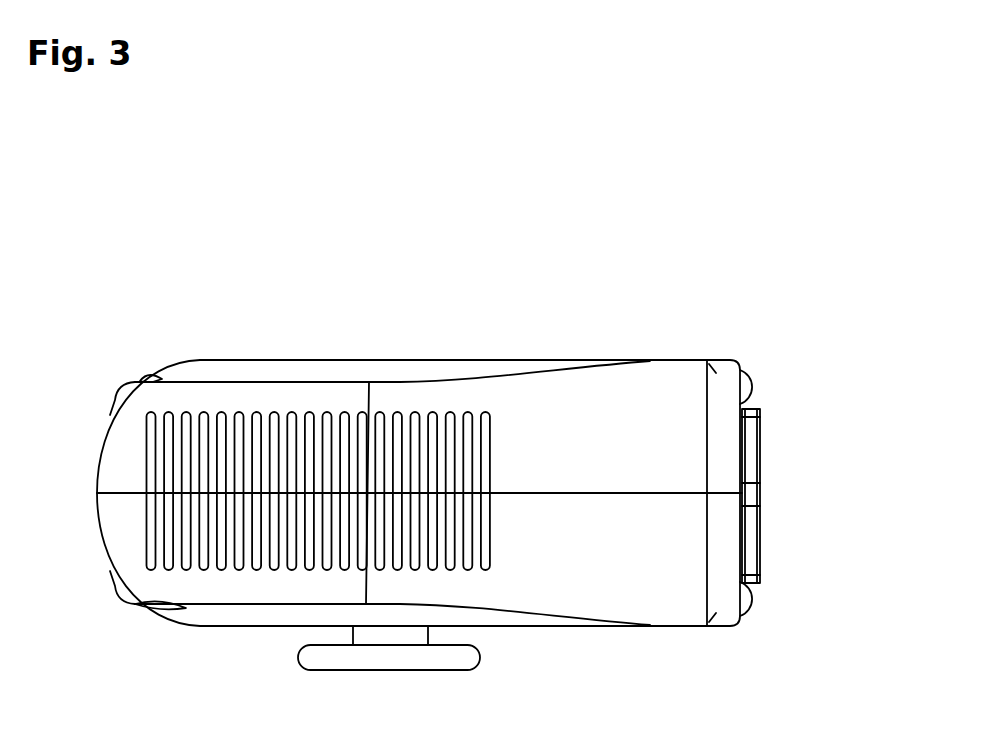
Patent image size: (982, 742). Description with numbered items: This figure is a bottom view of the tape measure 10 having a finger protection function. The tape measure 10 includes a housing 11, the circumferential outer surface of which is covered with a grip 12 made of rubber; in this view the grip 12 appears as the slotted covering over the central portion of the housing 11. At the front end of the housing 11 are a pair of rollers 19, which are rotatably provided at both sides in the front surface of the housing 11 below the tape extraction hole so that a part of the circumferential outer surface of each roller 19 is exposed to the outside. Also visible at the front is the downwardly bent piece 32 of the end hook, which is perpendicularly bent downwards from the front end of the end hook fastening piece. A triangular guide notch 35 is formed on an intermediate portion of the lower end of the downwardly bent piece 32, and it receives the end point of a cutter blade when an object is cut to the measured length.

The tape measure 10 is at (145, 291).
The housing 11 is at (425, 372).
The grip 12 is at (280, 387).
The rollers 19 is at (747, 377).
The downwardly bent piece 32 is at (755, 447).
The triangular guide notch 35 is at (752, 495).